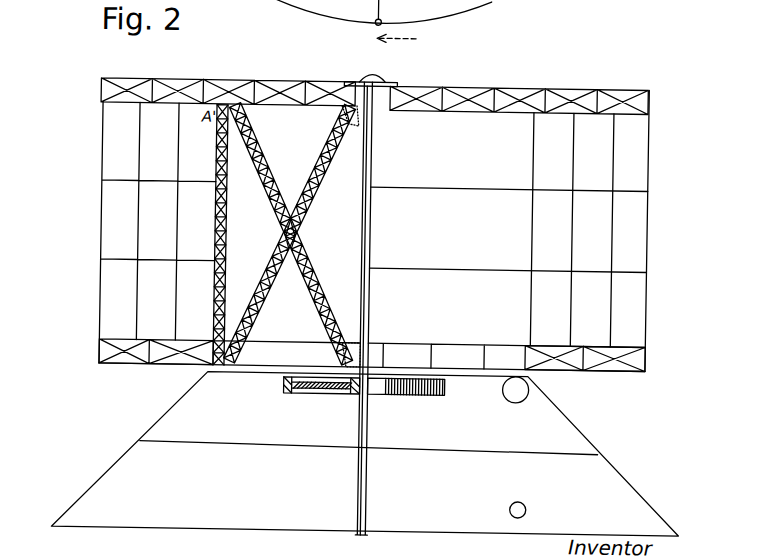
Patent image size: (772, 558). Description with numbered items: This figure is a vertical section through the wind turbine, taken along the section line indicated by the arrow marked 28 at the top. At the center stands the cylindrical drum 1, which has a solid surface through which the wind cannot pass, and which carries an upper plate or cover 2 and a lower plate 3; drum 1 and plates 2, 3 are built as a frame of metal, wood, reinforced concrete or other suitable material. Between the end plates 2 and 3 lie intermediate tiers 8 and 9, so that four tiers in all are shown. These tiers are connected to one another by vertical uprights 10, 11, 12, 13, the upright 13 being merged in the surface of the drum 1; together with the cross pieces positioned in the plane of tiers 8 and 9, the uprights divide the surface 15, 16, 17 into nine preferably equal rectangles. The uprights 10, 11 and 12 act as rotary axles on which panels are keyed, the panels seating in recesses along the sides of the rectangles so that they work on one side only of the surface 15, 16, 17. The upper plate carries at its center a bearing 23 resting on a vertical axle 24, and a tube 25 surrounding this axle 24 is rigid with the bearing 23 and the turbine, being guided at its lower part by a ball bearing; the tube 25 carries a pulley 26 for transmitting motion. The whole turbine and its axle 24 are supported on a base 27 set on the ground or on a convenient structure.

The cylindrical drum 1 is at (530, 226).
The upper plate or cover 2 is at (522, 88).
The lower plate 3 is at (557, 368).
The concentric circle (tier) 8 is at (633, 189).
The tier 9 is at (636, 273).
The vertical upright 10 is at (99, 264).
The vertical upright 11 is at (136, 264).
The vertical upright 12 is at (175, 264).
The vertical upright 13 is at (213, 264).
The divisional rectangle corner / surface 15 is at (212, 343).
The divisional rectangle corner / surface 16 is at (222, 101).
The divisional rectangle corner / surface 17 is at (106, 81).
The bearing 23 is at (383, 83).
The vertical axle 24 is at (371, 186).
The tube 25 is at (363, 238).
The pulley 26 is at (316, 395).
The base 27 is at (155, 431).
The panel position 28 is at (404, 34).